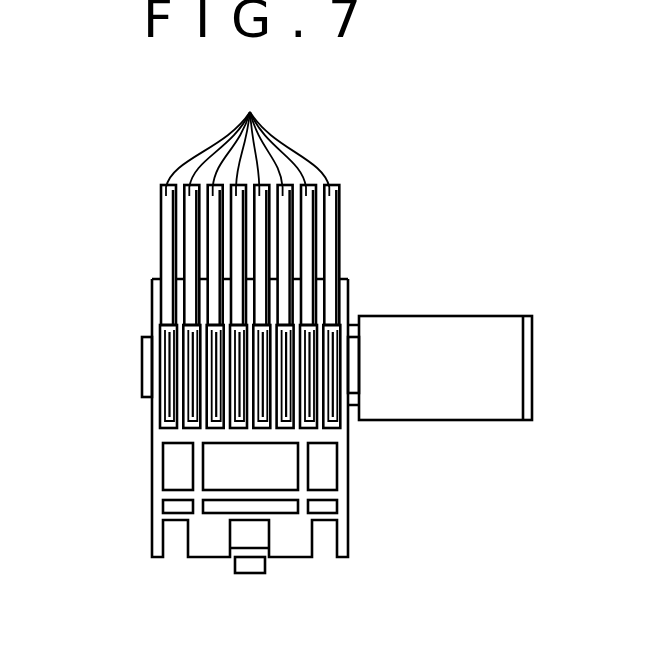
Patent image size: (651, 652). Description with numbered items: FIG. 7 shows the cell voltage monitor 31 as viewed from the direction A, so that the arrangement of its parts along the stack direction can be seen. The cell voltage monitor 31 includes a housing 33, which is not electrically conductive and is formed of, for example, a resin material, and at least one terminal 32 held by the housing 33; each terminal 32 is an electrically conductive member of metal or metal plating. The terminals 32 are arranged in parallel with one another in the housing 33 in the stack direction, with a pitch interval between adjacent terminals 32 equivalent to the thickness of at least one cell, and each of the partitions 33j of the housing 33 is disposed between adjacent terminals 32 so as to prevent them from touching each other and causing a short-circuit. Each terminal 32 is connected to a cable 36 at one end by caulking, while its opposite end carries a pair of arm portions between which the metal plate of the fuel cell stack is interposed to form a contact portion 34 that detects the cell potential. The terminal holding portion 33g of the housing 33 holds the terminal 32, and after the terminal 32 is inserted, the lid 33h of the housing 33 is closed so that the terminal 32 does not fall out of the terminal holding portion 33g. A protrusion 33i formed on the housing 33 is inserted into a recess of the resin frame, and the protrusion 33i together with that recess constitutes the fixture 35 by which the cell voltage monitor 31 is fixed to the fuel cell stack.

The cell voltage monitor 31 is at (437, 432).
The terminal 32 is at (322, 374).
The housing 33 is at (349, 523).
The terminal holding portion 33g is at (151, 310).
The lid 33h is at (445, 316).
The protrusion 33i is at (242, 575).
The partition 33j is at (320, 303).
The contact portion 34 is at (166, 424).
The fixture 35 is at (258, 565).
The cable 36 is at (247, 137).